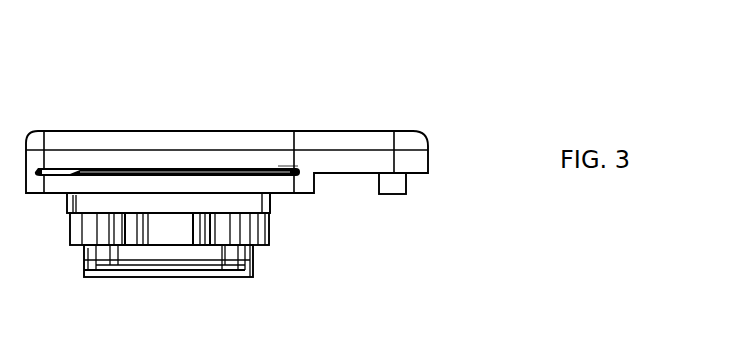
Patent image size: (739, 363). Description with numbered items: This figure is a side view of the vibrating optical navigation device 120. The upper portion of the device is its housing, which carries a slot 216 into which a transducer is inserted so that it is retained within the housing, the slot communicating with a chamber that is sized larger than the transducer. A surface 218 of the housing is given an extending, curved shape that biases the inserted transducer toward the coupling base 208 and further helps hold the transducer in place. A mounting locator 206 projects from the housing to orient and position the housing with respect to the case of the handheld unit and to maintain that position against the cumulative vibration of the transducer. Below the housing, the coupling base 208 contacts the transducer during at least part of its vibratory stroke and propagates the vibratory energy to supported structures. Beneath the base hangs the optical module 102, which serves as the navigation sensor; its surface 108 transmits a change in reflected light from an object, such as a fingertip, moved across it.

The optical navigation device 120 is at (298, 104).
The slot 216 is at (155, 164).
The surface 218 is at (277, 165).
The mounting locator 206 is at (404, 182).
The coupling base 208 is at (253, 203).
The optical module 102 is at (241, 273).
The surface 108 is at (150, 278).